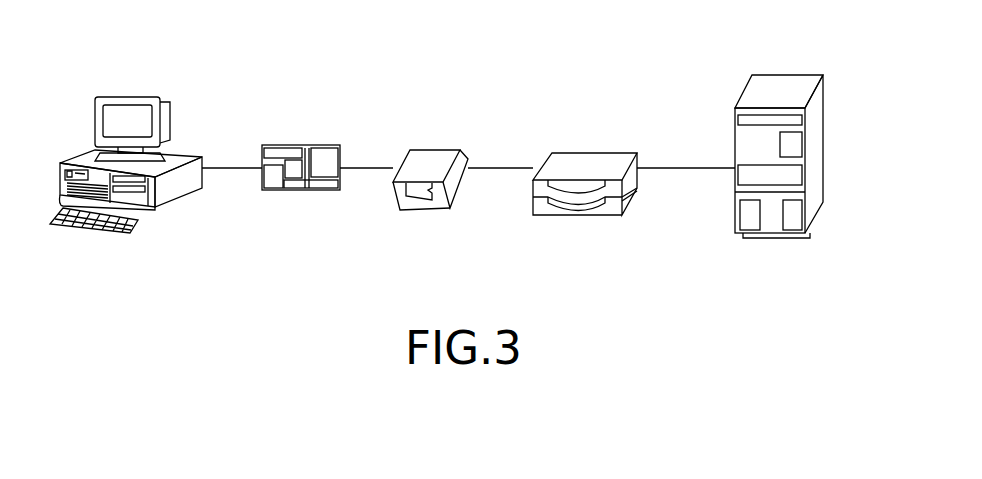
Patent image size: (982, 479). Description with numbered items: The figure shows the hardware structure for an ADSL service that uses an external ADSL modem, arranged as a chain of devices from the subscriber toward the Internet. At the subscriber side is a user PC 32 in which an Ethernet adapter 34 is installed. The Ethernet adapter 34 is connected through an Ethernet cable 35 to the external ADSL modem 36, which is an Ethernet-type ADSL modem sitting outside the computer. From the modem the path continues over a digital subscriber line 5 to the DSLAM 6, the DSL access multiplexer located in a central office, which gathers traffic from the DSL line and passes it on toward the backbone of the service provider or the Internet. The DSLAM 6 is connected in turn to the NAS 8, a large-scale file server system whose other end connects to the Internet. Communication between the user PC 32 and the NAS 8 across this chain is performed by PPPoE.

The user PC 32 is at (128, 96).
The Ethernet adapter 34 is at (309, 146).
The Ethernet cable 35 is at (367, 167).
The external ADSL modem 36 is at (437, 150).
The digital subscriber line 5 is at (505, 167).
The DSLAM 6 is at (597, 153).
The NAS 8 is at (788, 75).